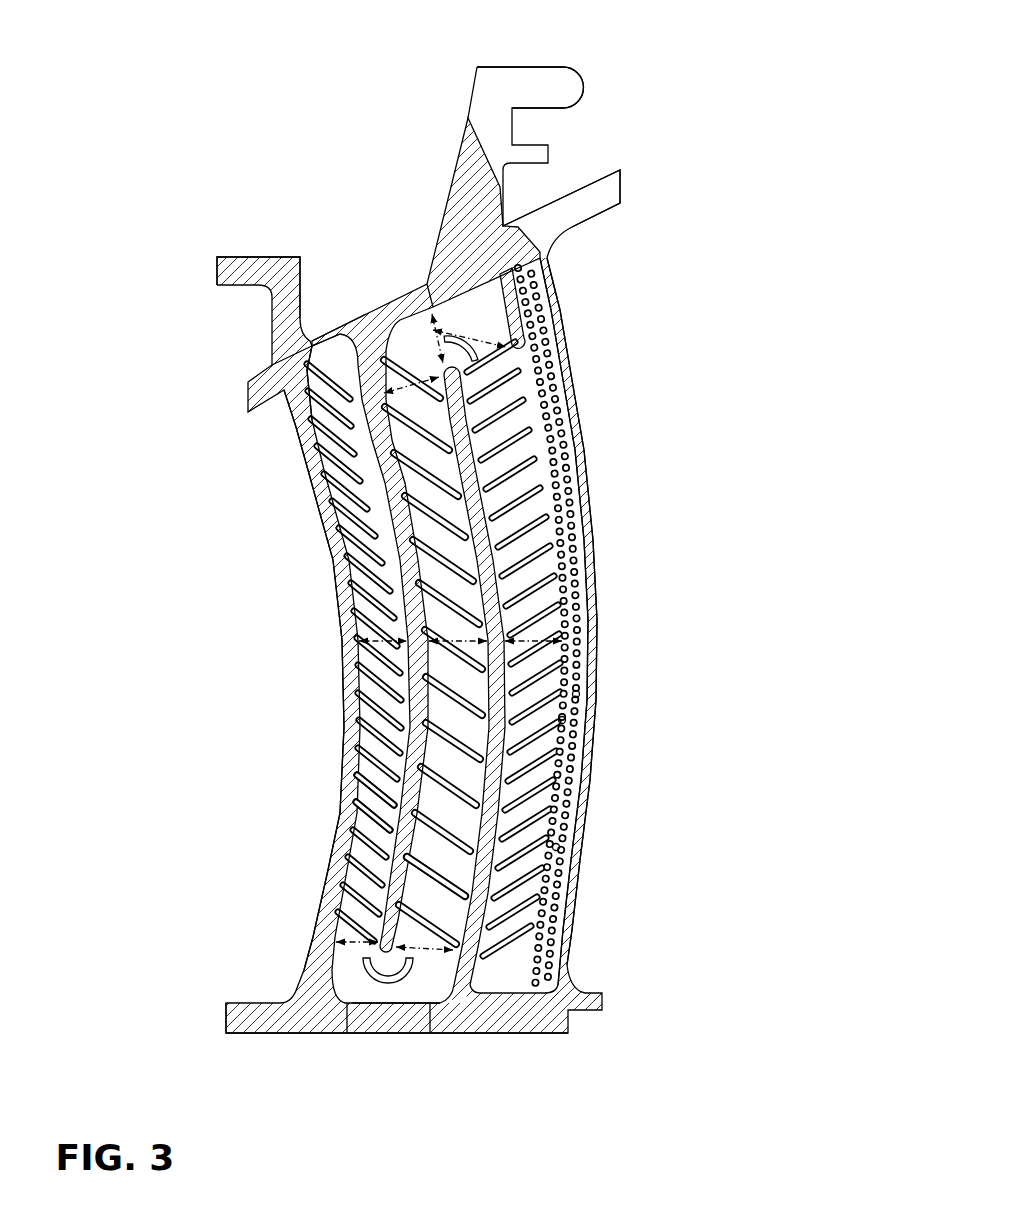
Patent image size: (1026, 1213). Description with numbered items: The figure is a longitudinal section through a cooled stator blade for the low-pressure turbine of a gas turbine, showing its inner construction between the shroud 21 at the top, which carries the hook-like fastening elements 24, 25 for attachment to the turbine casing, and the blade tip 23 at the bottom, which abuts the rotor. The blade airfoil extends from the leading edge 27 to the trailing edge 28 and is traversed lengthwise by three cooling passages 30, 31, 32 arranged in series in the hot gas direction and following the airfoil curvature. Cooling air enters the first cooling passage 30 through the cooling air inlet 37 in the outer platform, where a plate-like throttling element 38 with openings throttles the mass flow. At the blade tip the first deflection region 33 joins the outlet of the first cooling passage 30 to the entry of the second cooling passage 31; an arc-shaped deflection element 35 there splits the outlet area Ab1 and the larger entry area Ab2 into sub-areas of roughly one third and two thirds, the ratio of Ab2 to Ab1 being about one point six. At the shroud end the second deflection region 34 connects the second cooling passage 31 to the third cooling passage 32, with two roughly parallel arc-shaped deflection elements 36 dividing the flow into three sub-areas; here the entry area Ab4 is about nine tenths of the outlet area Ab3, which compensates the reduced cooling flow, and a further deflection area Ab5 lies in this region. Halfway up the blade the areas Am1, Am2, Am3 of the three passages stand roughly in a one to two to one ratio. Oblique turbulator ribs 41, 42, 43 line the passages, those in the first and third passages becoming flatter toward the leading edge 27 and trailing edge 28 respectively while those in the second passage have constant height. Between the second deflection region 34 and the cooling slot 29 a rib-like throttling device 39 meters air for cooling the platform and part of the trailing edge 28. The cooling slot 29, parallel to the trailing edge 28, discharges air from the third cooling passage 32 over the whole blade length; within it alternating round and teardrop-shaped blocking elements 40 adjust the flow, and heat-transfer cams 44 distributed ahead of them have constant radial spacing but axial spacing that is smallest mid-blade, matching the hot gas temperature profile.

The shroud 21 is at (608, 183).
The blade tip 23 is at (276, 1030).
The fastening element 24 is at (258, 276).
The fastening element 25 is at (567, 82).
The leading edge 27 is at (345, 704).
The trailing edge 28 is at (583, 765).
The cooling slot 29 is at (578, 540).
The first cooling passage 30 is at (355, 510).
The second cooling passage 31 is at (462, 548).
The third cooling passage 32 is at (530, 480).
The first deflection region 33 is at (386, 995).
The second deflection region 34 is at (427, 330).
The deflection element 35 is at (400, 973).
The deflection elements 36 is at (483, 363).
The cooling air inlet 37 is at (335, 345).
The throttling element 38 is at (347, 321).
The throttling device 39 is at (512, 308).
The blocking element 40 is at (553, 943).
The turbulator rib 41 is at (368, 822).
The turbulator rib 42 is at (437, 880).
The turbulator rib 43 is at (558, 723).
The cam 44 is at (558, 847).
The cross-sectional area Ab1 is at (360, 944).
The cross-sectional area Ab2 is at (423, 950).
The cross-sectional area Ab3 is at (422, 378).
The cross-sectional area Ab4 is at (438, 326).
The cross-sectional area Ab5 is at (505, 305).
The cross-sectional area Am1 is at (350, 641).
The cross-sectional area Am2 is at (455, 641).
The cross-sectional area Am3 is at (510, 641).